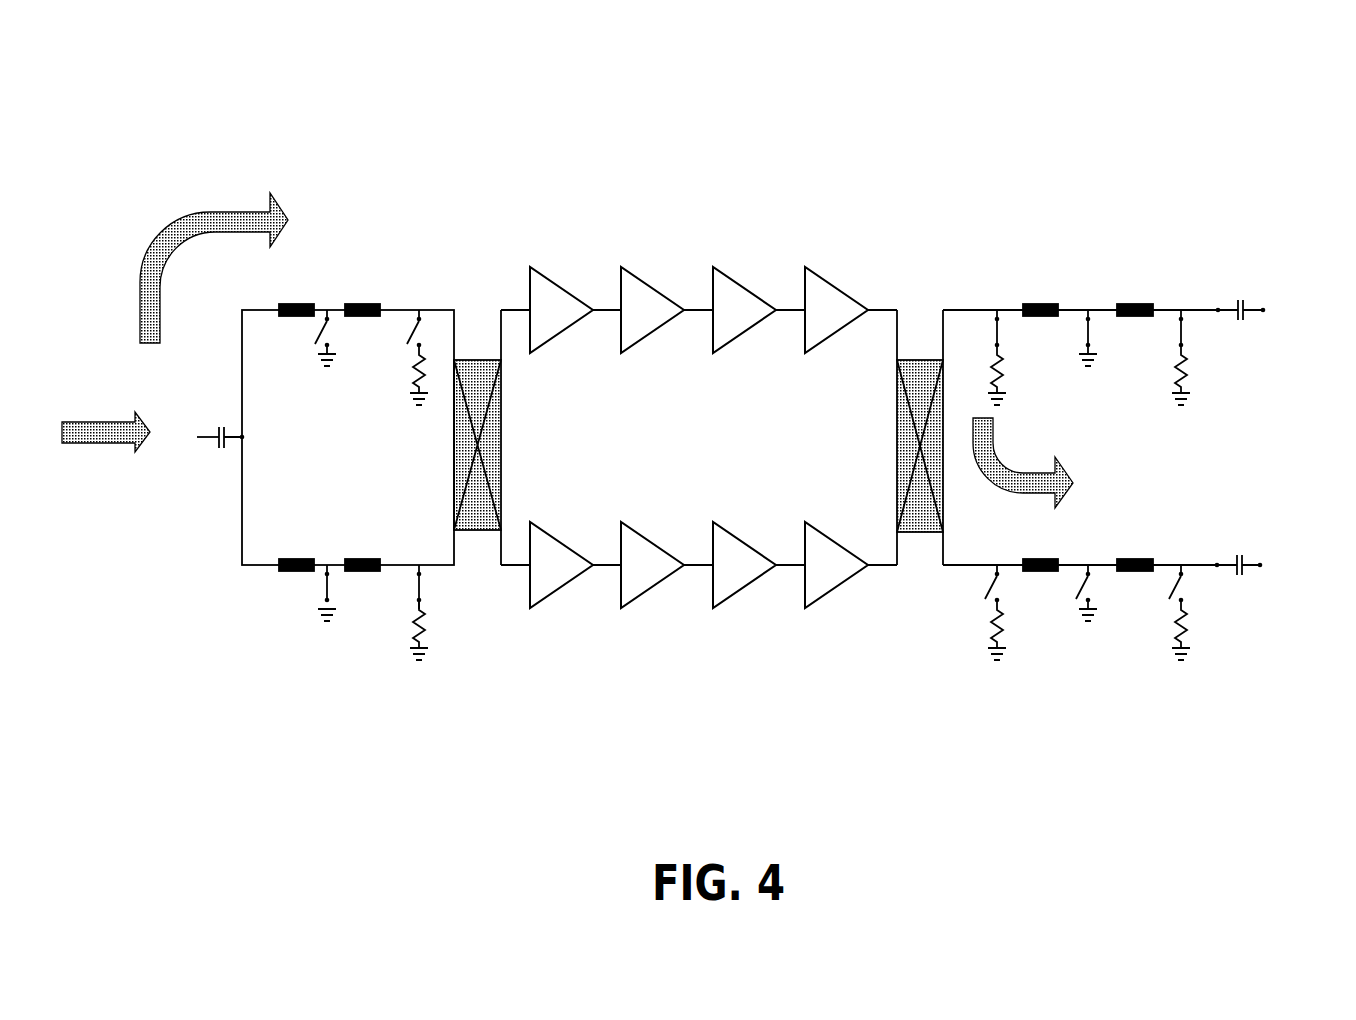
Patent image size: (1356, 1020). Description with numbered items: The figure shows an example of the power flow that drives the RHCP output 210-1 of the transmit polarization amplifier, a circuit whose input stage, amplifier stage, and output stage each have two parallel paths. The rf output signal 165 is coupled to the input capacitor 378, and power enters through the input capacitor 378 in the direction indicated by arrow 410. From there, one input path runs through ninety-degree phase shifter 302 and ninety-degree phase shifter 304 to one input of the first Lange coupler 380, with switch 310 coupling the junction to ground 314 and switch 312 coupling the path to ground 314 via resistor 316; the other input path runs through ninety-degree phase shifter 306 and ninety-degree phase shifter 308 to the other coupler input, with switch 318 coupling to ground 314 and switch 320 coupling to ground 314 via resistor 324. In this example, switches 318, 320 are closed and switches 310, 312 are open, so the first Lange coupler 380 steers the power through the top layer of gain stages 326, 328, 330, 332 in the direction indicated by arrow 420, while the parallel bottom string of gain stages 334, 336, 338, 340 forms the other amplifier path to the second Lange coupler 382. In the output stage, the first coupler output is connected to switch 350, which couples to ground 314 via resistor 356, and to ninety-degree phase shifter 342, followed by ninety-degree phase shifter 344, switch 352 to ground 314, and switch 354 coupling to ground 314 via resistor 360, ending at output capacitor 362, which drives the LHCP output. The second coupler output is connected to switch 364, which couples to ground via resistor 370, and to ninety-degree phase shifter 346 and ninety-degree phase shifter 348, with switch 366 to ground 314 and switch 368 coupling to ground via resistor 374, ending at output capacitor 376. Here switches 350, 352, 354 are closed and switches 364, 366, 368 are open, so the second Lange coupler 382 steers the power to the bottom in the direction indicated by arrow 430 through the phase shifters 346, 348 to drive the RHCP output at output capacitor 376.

The RHCP output power flow 210-1 is at (103, 88).
The rf output signal 165 is at (197, 440).
The 90 degrees phase shifter 302 is at (302, 303).
The 90 degrees phase shifter 304 is at (360, 303).
The 90 degrees phase shifter 306 is at (302, 559).
The 90 degrees phase shifter 308 is at (360, 559).
The switch 310 is at (320, 329).
The switch 312 is at (414, 331).
The ground 314 is at (320, 353).
The resistor 316 is at (417, 373).
The switch 318 is at (325, 586).
The switch 320 is at (417, 586).
The resistor 324 is at (417, 627).
The gain stage 326 is at (528, 283).
The gain stage 328 is at (620, 283).
The gain stage 330 is at (712, 283).
The gain stage 332 is at (804, 283).
The gain stage 334 is at (531, 606).
The gain stage 336 is at (622, 608).
The gain stage 338 is at (714, 608).
The gain stage 340 is at (806, 608).
The 90 degrees phase shifter 342 is at (1043, 303).
The 90 degrees phase shifter 344 is at (1130, 303).
The 90 degrees phase shifter 346 is at (1052, 559).
The 90 degrees phase shifter 348 is at (1135, 559).
The switch 350 is at (995, 326).
The switch 352 is at (1085, 330).
The switch 354 is at (1178, 330).
The resistor 356 is at (994, 373).
The resistor 360 is at (1178, 373).
The output capacitor 362 is at (1236, 301).
The switch 364 is at (987, 587).
The switch 366 is at (1080, 587).
The switch 368 is at (1173, 587).
The resistor 370 is at (992, 630).
The resistor 374 is at (1180, 630).
The output capacitor 376 is at (1235, 562).
The input capacitor 378 is at (220, 427).
The first Lange coupler 380 is at (485, 359).
The second Lange coupler 382 is at (928, 358).
The arrow 410 is at (107, 417).
The arrow 420 is at (183, 223).
The arrow 430 is at (995, 458).